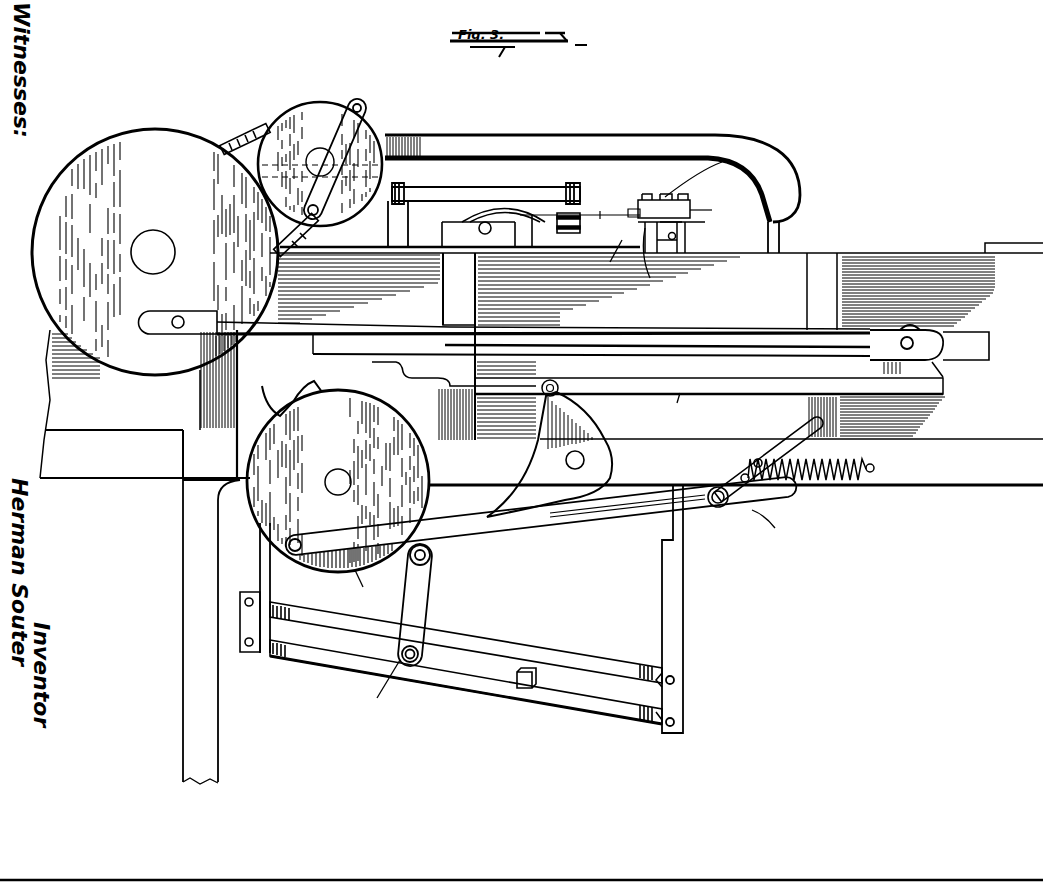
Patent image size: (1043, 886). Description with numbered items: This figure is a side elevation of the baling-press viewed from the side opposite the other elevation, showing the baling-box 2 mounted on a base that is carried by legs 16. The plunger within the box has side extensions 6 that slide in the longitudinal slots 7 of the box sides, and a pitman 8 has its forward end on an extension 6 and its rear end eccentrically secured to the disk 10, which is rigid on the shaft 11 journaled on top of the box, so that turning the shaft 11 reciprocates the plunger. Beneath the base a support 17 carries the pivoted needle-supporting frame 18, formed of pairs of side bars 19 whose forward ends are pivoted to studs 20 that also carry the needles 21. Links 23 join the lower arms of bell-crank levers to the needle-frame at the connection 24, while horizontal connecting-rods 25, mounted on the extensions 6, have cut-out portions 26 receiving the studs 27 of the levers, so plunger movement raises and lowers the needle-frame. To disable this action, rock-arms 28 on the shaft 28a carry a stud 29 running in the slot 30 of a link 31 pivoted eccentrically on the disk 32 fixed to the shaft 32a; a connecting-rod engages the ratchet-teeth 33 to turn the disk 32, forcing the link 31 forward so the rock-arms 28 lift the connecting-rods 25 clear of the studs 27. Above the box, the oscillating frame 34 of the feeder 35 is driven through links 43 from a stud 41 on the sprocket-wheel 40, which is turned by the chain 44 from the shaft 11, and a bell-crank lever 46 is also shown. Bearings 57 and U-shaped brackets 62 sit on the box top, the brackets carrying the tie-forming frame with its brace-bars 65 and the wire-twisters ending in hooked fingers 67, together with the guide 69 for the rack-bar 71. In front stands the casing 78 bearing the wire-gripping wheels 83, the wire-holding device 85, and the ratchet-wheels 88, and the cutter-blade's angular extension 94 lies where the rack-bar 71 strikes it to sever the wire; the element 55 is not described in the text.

The baling-box 2 is at (931, 291).
The extensions 6 is at (912, 340).
The longitudinal slots 7 is at (350, 350).
The pitmen 8 is at (357, 326).
The disk 10 is at (155, 252).
The shaft 11 is at (163, 252).
The legs 16 is at (1042, 572).
The support 17 is at (272, 582).
The needle-supporting frame 18 is at (483, 673).
The side bars 19 is at (302, 651).
The studs 20 is at (684, 688).
The needles 21 is at (683, 610).
The links 23 is at (424, 600).
The pivotal connection 24 is at (381, 699).
The connecting-rods 25 is at (691, 411).
The cut-out portion 26 is at (546, 396).
The studs 27 is at (549, 448).
The rock-arms 28 is at (797, 443).
The shaft 28a is at (755, 460).
The stud 29 is at (718, 507).
The slot 30 is at (784, 531).
The link 31 is at (535, 520).
The disk 32 is at (379, 588).
The shaft 32a is at (333, 473).
The ratchet-teeth 33 is at (300, 393).
The oscillating frame 34 is at (615, 136).
The feeder 35 is at (781, 226).
The sprocket-wheel 40 is at (316, 118).
The stud 41 is at (318, 215).
The links 43 is at (380, 128).
The chain 44 is at (238, 137).
The bell-crank lever 46 is at (460, 193).
The stop 55 is at (528, 674).
The bearings 57 is at (470, 240).
The U-shaped brackets 62 is at (611, 266).
The longitudinal brace-bars 65 is at (537, 210).
The hooked fingers 67 is at (674, 240).
The guide 69 is at (627, 213).
The rack-bar 71 is at (657, 263).
The casing 78 is at (655, 200).
The wire-gripping wheels 83 is at (711, 207).
The wire-holding device 85 is at (668, 200).
The ratchet-wheels 88 is at (703, 171).
The angular extension 94 is at (701, 228).